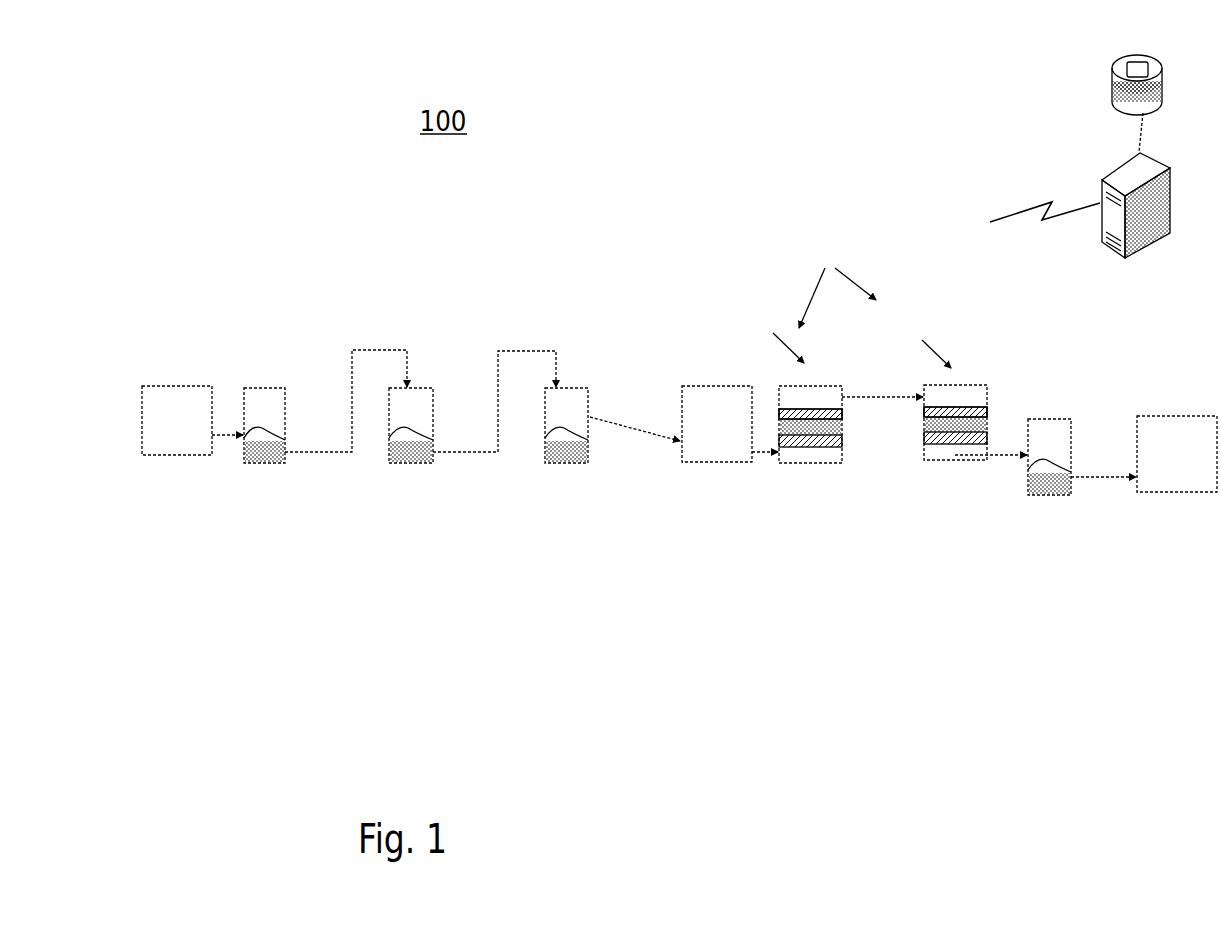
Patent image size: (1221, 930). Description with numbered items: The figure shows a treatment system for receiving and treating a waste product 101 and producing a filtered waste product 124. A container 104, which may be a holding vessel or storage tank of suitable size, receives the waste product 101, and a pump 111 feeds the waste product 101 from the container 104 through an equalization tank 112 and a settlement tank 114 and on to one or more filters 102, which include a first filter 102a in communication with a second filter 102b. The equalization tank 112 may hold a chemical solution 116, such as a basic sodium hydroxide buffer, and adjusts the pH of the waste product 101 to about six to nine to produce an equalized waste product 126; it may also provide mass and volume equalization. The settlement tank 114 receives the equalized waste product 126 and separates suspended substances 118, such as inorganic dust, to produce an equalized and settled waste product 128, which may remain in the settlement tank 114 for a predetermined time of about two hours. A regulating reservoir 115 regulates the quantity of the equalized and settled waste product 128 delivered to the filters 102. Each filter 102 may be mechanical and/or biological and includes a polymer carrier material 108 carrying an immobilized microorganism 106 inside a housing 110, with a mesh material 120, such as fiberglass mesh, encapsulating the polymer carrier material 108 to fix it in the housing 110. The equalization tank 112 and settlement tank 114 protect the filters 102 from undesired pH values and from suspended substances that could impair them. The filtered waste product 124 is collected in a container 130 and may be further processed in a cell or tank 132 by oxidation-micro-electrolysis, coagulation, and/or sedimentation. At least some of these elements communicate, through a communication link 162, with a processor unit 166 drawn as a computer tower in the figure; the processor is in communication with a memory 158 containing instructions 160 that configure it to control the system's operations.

The waste product 101 is at (332, 373).
The filter 102 is at (837, 287).
The first filter 102a is at (764, 334).
The second filter 102b is at (912, 336).
The container 104 is at (283, 408).
The immobilized microorganism 106 is at (842, 423).
The polymer carrier material 108 is at (901, 424).
The housing 110 is at (808, 470).
The pump 111 is at (187, 457).
The equalization tank 112 is at (425, 390).
The settlement tank 114 is at (570, 388).
The regulating reservoir 115 is at (725, 463).
The chemical solution 116 is at (410, 467).
The suspended substances 118 is at (565, 465).
The mesh material 120 is at (924, 417).
The filtered waste product 124 is at (1063, 497).
The equalized waste product 126 is at (485, 382).
The equalized and settled waste product 128 is at (643, 467).
The container 130 is at (1073, 437).
The cell or tank 132 is at (1162, 490).
The memory 158 is at (1122, 110).
The instructions 160 is at (1128, 63).
The communication link 162 is at (1042, 220).
The server 166 is at (1123, 258).